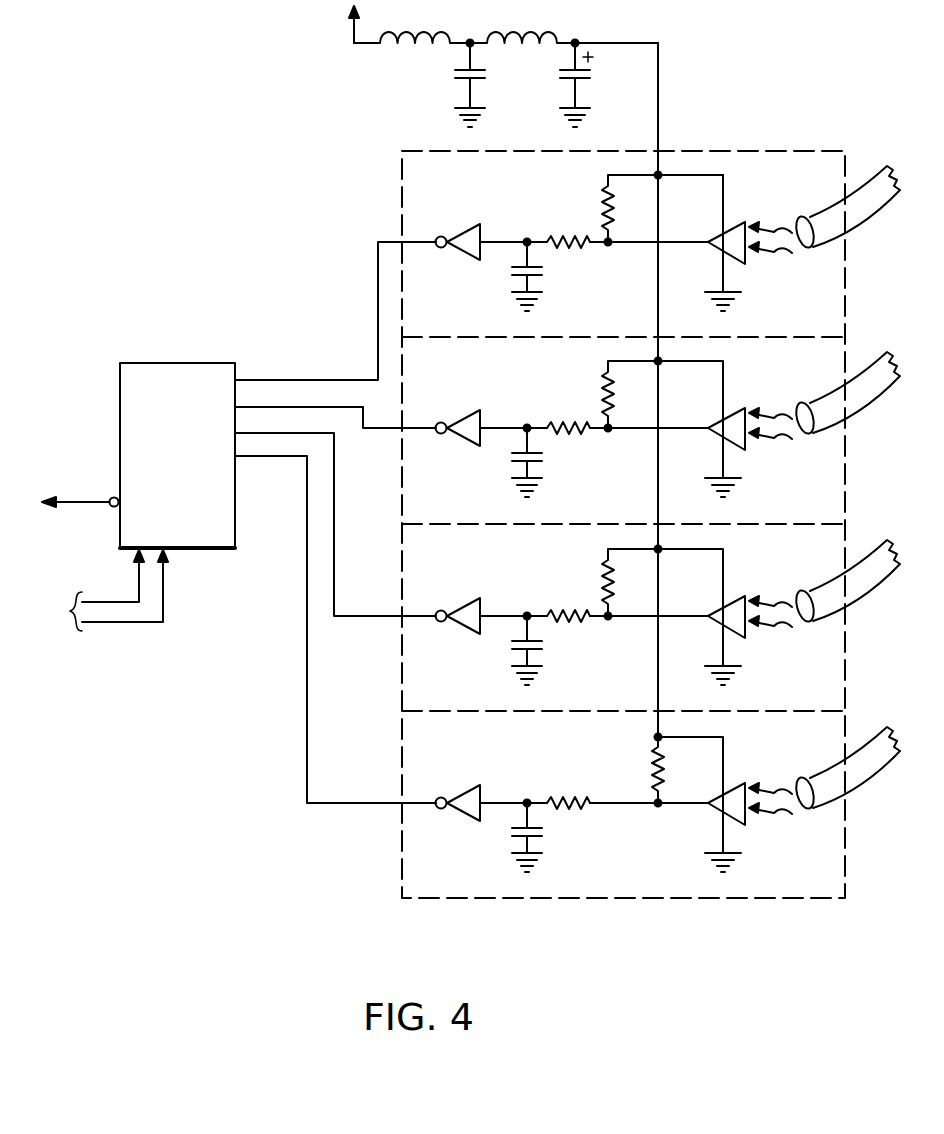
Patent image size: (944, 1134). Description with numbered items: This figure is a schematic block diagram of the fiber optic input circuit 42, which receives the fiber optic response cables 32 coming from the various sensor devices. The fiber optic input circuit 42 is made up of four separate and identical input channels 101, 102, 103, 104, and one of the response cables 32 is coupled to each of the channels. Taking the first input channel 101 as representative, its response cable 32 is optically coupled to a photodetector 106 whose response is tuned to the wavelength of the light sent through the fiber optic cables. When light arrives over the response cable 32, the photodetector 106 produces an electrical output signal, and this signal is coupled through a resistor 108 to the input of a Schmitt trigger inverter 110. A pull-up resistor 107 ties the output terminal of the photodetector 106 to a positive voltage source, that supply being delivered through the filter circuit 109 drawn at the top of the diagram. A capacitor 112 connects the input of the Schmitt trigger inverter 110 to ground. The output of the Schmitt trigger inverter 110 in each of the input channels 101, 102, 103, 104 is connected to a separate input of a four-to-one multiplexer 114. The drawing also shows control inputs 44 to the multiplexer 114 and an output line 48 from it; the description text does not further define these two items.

The fiber optic response cable 32 is at (866, 213).
The fiber optic input circuit 42 is at (235, 699).
The control inputs 44 is at (68, 628).
The output line 48 is at (96, 501).
The first input channel 101 is at (626, 238).
The second input channel 102 is at (810, 505).
The third input channel 103 is at (812, 693).
The fourth input channel 104 is at (822, 883).
The photodetector 106 is at (742, 222).
The pull-up resistor 107 is at (601, 203).
The resistor 108 is at (558, 236).
The filter circuit 109 is at (432, 74).
The Schmitt trigger inverter 110 is at (466, 224).
The capacitor 112 is at (560, 277).
The four-to-one multiplexer 114 is at (178, 363).